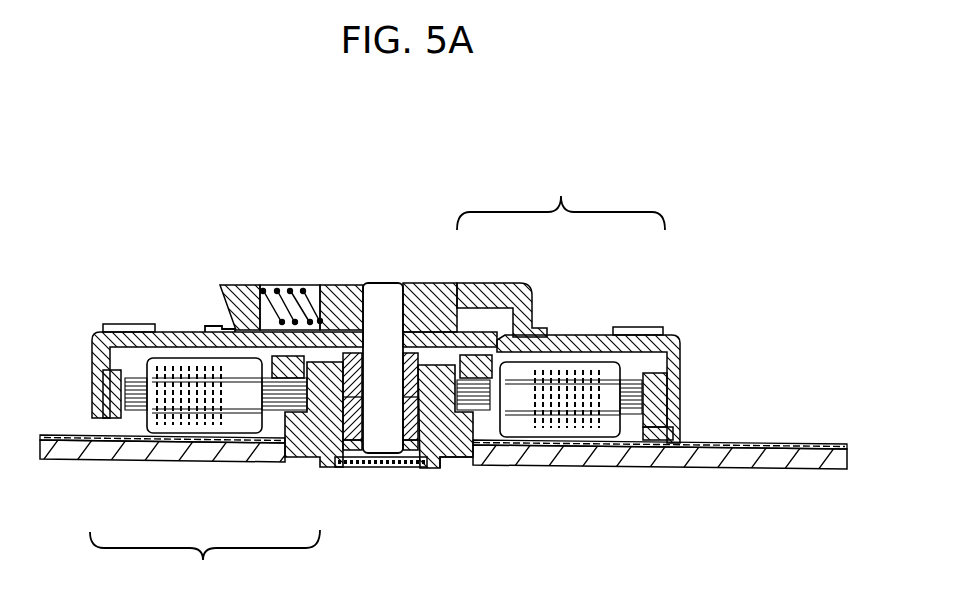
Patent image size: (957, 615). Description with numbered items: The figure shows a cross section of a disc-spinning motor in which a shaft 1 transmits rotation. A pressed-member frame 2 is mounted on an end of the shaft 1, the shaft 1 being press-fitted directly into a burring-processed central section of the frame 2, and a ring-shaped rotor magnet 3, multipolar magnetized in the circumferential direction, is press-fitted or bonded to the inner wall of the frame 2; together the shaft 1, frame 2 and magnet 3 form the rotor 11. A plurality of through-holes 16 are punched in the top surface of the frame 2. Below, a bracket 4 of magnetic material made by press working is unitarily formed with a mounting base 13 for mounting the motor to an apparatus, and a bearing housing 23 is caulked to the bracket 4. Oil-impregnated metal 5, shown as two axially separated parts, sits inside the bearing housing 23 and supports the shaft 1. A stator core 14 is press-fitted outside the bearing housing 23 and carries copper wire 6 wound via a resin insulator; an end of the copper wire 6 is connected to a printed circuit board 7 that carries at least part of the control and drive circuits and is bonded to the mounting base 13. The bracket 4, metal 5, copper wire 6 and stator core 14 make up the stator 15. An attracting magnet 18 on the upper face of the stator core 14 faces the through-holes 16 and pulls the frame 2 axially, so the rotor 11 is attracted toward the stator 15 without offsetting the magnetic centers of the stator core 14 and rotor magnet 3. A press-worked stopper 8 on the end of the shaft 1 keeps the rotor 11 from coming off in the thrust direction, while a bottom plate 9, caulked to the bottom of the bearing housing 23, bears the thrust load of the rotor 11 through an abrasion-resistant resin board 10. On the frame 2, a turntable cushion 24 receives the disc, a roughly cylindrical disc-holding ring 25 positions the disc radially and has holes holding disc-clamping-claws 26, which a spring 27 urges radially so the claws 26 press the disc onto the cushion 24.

The shaft 1 is at (390, 337).
The frame 2 is at (571, 337).
The rotor magnet 3 is at (654, 375).
The bracket 4 is at (251, 463).
The oil-impregnated metal 5 is at (323, 463).
The copper wire 6 is at (187, 430).
The printed circuit board 7 is at (140, 442).
The stopper 8 is at (440, 467).
The bottom plate 9 is at (387, 470).
The resin board 10 is at (360, 463).
The rotor 11 is at (561, 194).
The mounting base 13 is at (720, 458).
The stator core 14 is at (222, 423).
The stator 15 is at (205, 561).
The through-holes 16 is at (505, 367).
The attracting magnet 18 is at (275, 286).
The bearing housing 23 is at (470, 467).
The turntable cushion 24 is at (113, 323).
The disc-holding ring 25 is at (523, 286).
The disc-clamping-claws 26 is at (224, 289).
The spring 27 is at (300, 318).